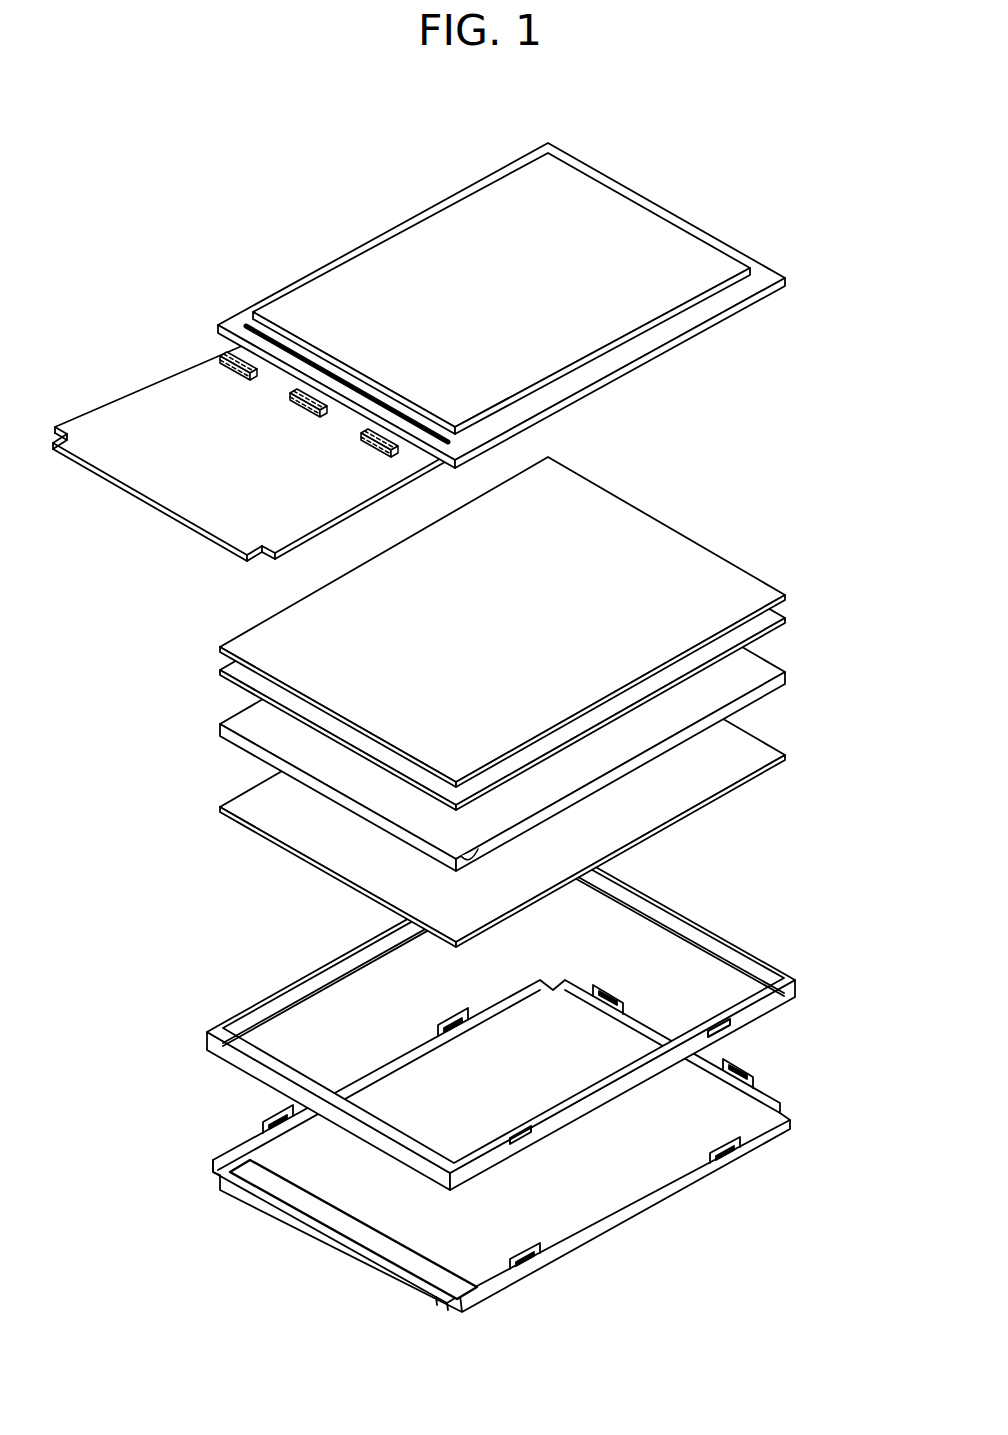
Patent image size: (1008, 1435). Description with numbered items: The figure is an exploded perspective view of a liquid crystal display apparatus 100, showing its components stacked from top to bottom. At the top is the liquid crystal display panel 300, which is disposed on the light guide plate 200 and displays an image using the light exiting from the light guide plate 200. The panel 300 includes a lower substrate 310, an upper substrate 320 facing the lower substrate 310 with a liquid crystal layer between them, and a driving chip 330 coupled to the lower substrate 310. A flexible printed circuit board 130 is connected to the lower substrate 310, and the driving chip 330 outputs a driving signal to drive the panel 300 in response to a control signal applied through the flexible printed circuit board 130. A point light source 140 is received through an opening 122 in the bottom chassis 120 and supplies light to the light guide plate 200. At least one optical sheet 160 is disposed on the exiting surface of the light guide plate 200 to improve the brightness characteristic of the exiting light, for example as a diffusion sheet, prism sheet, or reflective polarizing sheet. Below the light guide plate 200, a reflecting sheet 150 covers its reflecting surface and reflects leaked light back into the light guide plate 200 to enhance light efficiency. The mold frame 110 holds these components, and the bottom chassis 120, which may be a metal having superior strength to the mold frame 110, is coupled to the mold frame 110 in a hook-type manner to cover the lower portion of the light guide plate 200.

The liquid crystal display apparatus 100 is at (467, 704).
The mold frame 110 is at (752, 928).
The bottom chassis 120 is at (754, 1061).
The opening 122 is at (372, 1241).
The flexible printed circuit board 130 is at (153, 400).
The point light source 140 is at (227, 352).
The reflecting sheet 150 is at (774, 737).
The optical sheet 160 is at (788, 599).
The light guide plate 200 is at (772, 657).
The liquid crystal display panel 300 is at (516, 305).
The lower substrate 310 is at (705, 236).
The upper substrate 320 is at (640, 221).
The driving chip 330 is at (254, 324).